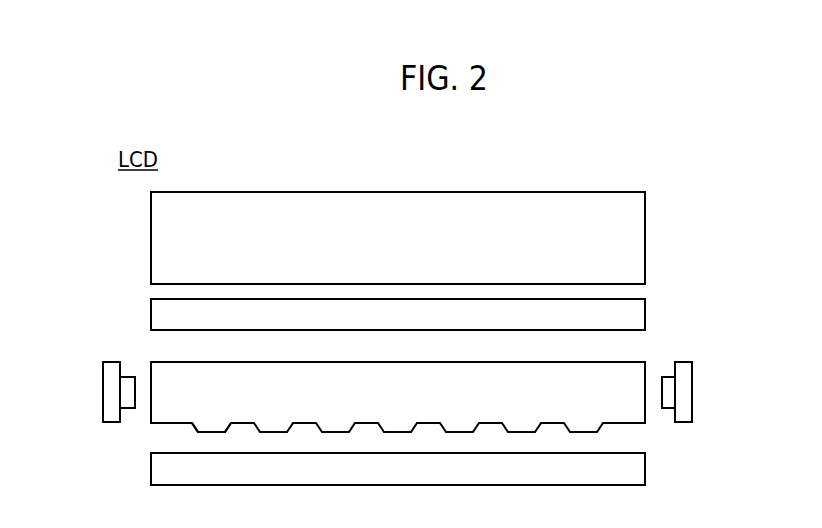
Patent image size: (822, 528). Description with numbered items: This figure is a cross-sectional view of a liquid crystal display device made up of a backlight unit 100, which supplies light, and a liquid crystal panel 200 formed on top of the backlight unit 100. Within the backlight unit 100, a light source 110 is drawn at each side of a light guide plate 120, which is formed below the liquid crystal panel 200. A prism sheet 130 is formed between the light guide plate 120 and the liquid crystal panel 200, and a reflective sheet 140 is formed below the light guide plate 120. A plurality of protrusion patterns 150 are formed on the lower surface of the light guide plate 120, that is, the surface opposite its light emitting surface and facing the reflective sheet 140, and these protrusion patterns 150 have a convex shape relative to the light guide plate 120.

The liquid crystal panel 200 is at (646, 242).
The backlight unit 100 is at (740, 299).
The prism sheet 130 is at (646, 306).
The light guide plate 120 is at (646, 417).
The protrusion patterns 150 is at (193, 424).
The reflective sheet 140 is at (646, 465).
The light source 110 is at (128, 376).